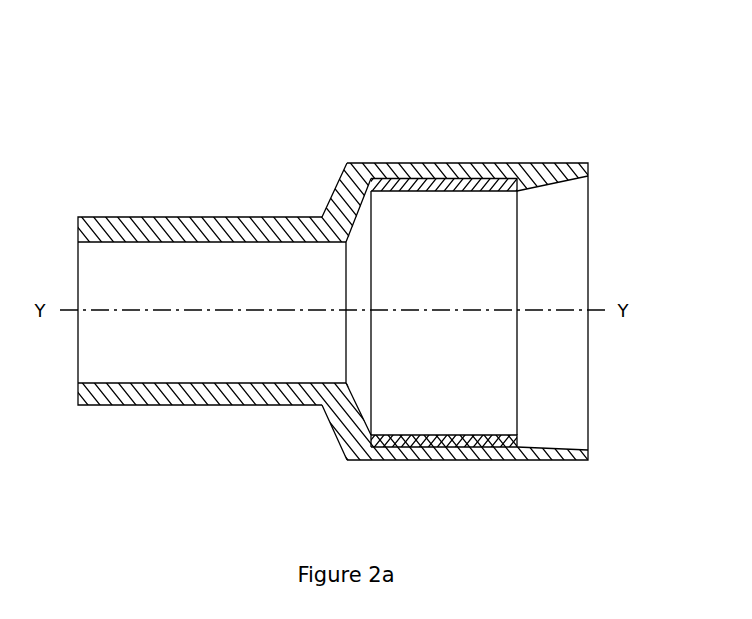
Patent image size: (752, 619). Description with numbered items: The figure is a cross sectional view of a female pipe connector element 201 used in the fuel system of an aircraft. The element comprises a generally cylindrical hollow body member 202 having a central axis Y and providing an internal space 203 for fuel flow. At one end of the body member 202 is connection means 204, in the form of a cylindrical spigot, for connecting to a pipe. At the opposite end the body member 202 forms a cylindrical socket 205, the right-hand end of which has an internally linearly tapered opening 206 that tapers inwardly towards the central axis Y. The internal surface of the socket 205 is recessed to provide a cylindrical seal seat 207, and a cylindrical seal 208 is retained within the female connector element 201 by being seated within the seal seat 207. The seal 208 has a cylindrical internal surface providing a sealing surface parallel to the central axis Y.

The female pipe connector element 201 is at (276, 73).
The body member 202 is at (347, 163).
The internal space 203 is at (327, 313).
The connection means 204 is at (203, 217).
The cylindrical socket 205 is at (468, 163).
The internally linearly tapered opening 206 is at (538, 441).
The seal seat 207 is at (442, 448).
The cylindrical seal 208 is at (467, 442).